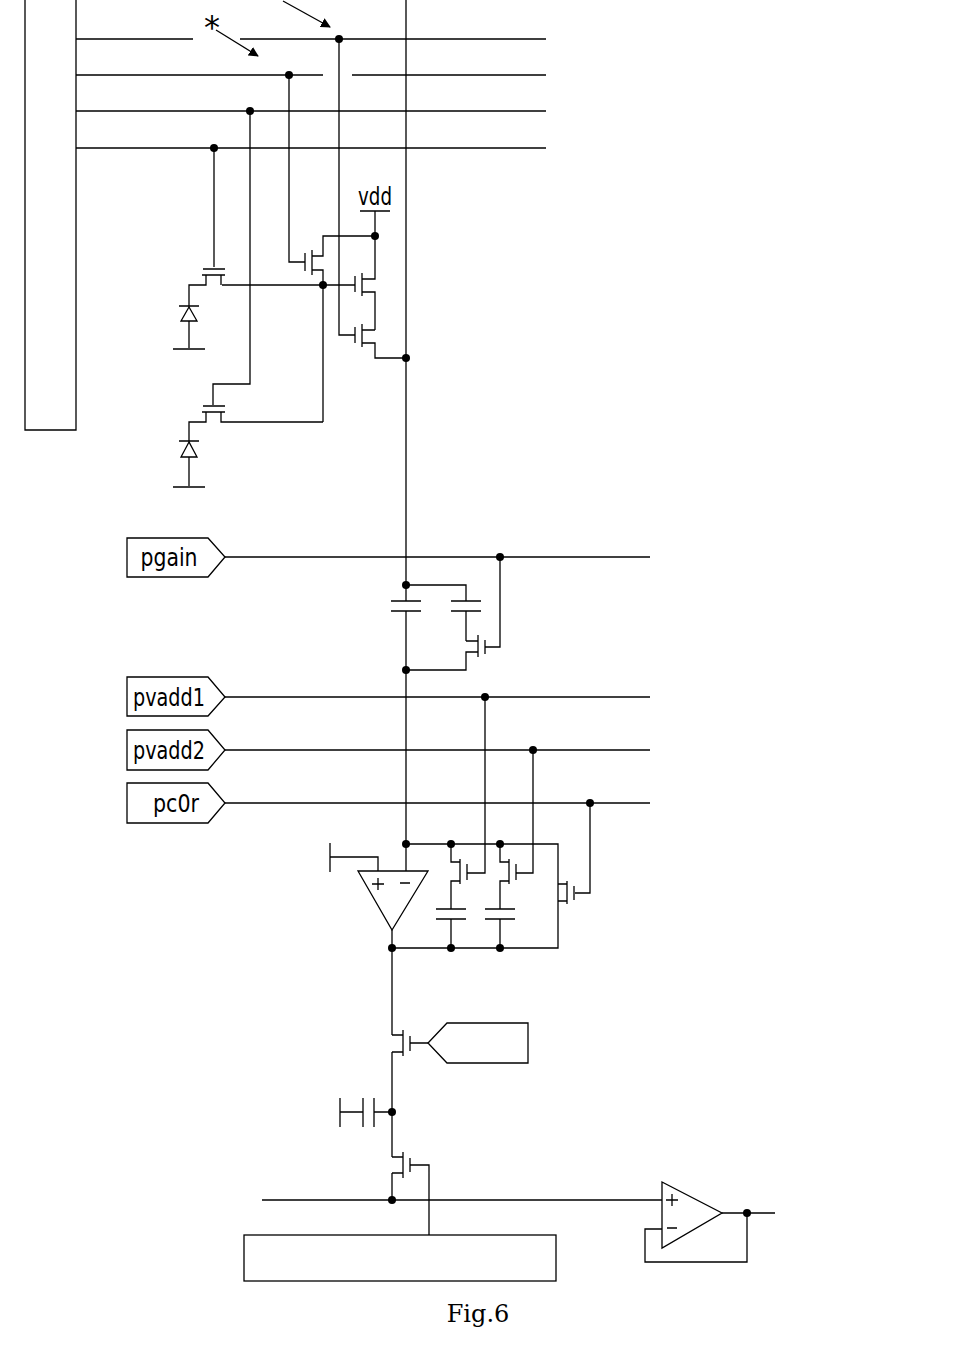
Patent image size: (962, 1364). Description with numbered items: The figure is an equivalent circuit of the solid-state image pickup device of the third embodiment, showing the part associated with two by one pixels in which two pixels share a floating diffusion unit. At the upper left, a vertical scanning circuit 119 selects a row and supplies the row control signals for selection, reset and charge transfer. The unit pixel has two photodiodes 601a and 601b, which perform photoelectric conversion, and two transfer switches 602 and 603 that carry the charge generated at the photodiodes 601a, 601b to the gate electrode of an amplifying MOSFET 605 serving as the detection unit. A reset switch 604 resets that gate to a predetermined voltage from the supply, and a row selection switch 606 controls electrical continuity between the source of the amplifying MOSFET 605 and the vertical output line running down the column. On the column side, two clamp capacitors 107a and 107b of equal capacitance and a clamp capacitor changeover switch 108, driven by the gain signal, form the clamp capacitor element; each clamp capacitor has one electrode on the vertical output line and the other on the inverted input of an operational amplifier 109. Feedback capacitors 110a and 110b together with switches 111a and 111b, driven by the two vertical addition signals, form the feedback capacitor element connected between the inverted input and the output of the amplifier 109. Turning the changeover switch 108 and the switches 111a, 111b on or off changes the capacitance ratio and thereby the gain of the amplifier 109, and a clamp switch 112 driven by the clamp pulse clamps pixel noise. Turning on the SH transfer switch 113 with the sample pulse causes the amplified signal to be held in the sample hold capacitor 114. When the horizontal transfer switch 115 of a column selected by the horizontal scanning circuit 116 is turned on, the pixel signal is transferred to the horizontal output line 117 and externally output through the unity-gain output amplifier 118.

The vertical scanning circuit 119 is at (285, 215).
The photodiode 601a is at (178, 309).
The photodiode 601b is at (178, 447).
The transfer switch 602 is at (204, 279).
The transfer switch 603 is at (204, 418).
The reset switch 604 is at (300, 283).
The amplifying MOSFET 605 is at (372, 283).
The row selection switch 606 is at (372, 333).
The clamp capacitor 107a is at (393, 603).
The clamp capacitor 107b is at (470, 594).
The clamp capacitor changeover switch 108 is at (473, 646).
The operational amplifier 109 is at (370, 905).
The feedback capacitor 110a is at (445, 925).
The feedback capacitor 110b is at (515, 925).
The switch 111a is at (457, 880).
The switch 111b is at (517, 877).
The clamp switch 112 is at (575, 899).
The SH transfer switch 113 is at (400, 1043).
The sample hold capacitor 114 is at (382, 1118).
The horizontal transfer switch 115 is at (398, 1165).
The horizontal scanning circuit 116 is at (400, 1258).
The horizontal output line 117 is at (540, 1198).
The unity-gain output amplifier 118 is at (697, 1195).